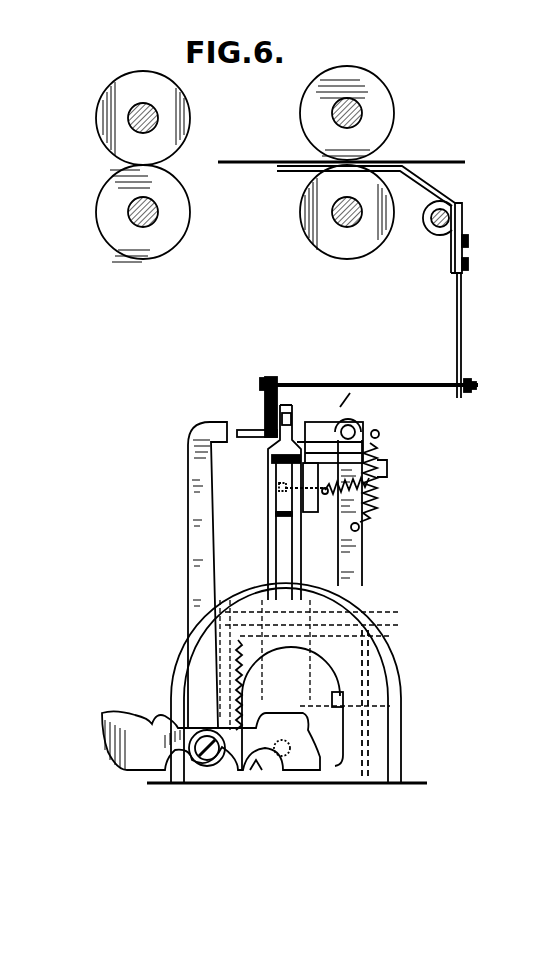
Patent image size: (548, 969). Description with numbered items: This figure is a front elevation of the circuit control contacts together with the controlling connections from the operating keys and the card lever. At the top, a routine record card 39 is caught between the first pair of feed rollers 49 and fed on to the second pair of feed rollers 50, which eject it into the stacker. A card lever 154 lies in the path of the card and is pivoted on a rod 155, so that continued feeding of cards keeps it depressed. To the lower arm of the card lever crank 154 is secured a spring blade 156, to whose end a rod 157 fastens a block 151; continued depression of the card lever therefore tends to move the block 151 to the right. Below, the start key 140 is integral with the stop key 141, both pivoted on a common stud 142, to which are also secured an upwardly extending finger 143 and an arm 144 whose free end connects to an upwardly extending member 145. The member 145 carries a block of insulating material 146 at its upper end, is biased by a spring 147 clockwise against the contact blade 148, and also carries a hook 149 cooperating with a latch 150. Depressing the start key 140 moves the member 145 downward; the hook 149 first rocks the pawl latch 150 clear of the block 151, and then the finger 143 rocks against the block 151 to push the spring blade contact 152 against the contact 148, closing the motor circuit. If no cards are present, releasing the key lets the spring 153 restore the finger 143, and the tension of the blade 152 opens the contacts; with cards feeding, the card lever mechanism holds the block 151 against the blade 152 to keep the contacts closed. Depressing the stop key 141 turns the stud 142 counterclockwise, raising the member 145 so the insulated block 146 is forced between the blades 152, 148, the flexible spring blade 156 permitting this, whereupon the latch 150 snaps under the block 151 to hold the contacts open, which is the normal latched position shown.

The first pair of feed rollers 49 is at (383, 103).
The second pair of feed rollers 50 is at (182, 227).
The routine record card 39 is at (421, 160).
The card lever 154 is at (438, 188).
The rod 155 is at (456, 219).
The spring blade 156 is at (462, 330).
The rod 157 is at (370, 373).
The block 151 is at (264, 400).
The contact blade 148 is at (333, 412).
The hook 149 is at (346, 420).
The latch 150 is at (343, 430).
The spring blade contact 152 is at (276, 450).
The block of insulating material 146 is at (284, 462).
The spring 147 is at (347, 494).
The upwardly extending member 145 is at (283, 553).
The finger 143 is at (192, 473).
The spring 153 is at (185, 648).
The stop key 141 is at (123, 722).
The stud 142 is at (207, 760).
The arm 144 is at (253, 762).
The start key 140 is at (307, 727).